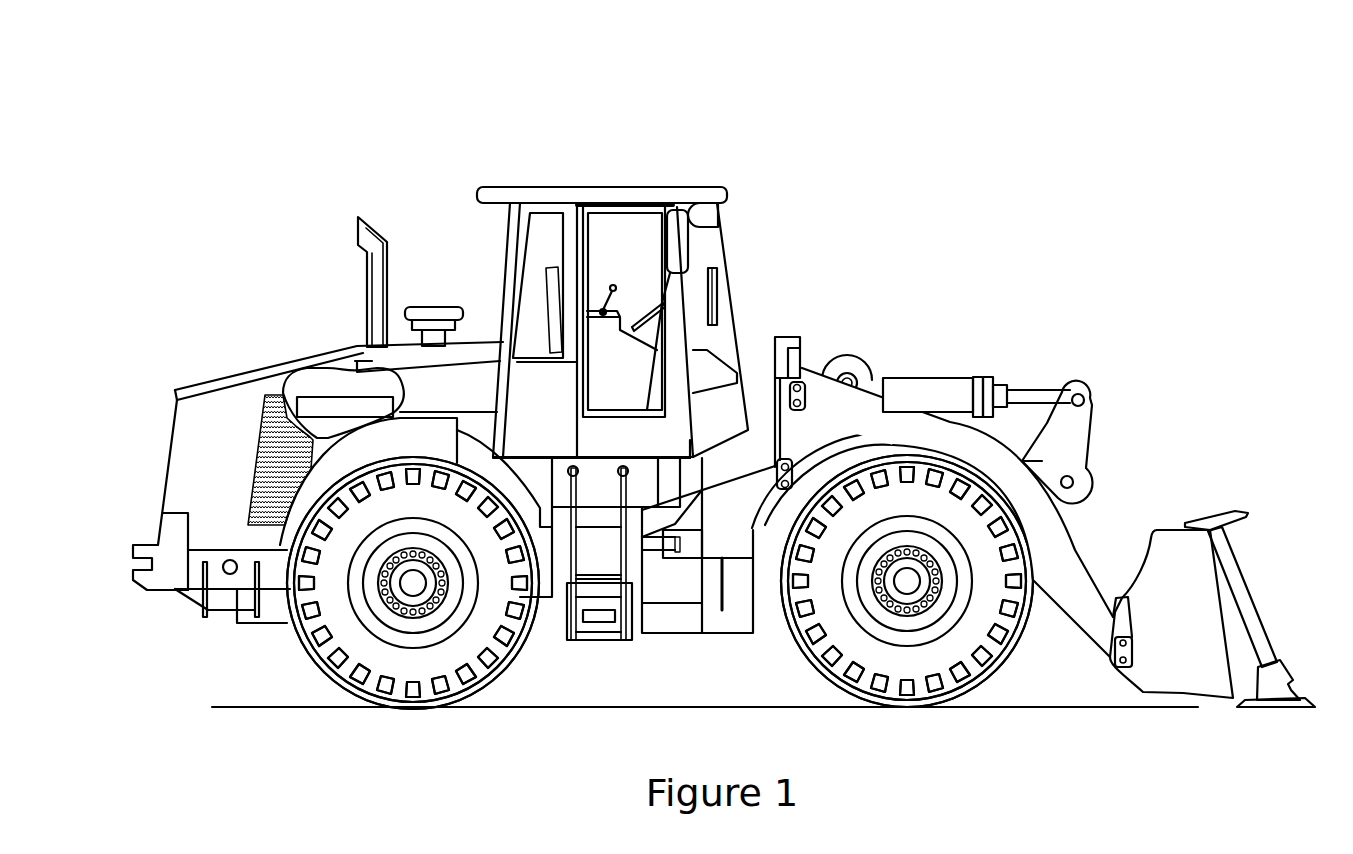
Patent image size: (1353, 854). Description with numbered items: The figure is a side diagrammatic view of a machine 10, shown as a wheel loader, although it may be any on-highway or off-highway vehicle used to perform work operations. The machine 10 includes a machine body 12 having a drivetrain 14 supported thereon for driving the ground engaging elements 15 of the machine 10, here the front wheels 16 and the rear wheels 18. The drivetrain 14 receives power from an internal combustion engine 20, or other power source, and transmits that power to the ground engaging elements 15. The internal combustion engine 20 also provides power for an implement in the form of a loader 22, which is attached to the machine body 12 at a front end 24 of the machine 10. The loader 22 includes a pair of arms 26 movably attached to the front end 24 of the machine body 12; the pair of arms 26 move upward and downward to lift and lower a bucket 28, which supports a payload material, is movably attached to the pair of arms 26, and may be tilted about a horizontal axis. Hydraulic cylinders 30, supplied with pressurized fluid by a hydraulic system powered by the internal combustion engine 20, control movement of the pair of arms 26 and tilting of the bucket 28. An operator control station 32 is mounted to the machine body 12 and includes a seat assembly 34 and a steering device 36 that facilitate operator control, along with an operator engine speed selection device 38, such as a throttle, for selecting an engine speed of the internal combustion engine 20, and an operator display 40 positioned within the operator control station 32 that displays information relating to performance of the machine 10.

The machine 10 is at (1053, 150).
The machine body 12 is at (553, 617).
The drivetrain 14 is at (658, 598).
The ground engaging elements 15 is at (483, 677).
The front wheels 16 is at (907, 690).
The rear wheels 18 is at (398, 688).
The internal combustion engine 20 is at (327, 395).
The loader 22 is at (1093, 622).
The front end 24 is at (851, 184).
The pair of arms 26 is at (1060, 568).
The bucket 28 is at (1220, 677).
The hydraulic cylinders 30 is at (950, 378).
The operator control station 32 is at (650, 187).
The seat assembly 34 is at (640, 367).
The steering device 36 is at (660, 304).
The operator engine speed selection device 38 is at (610, 288).
The operator display 40 is at (715, 277).